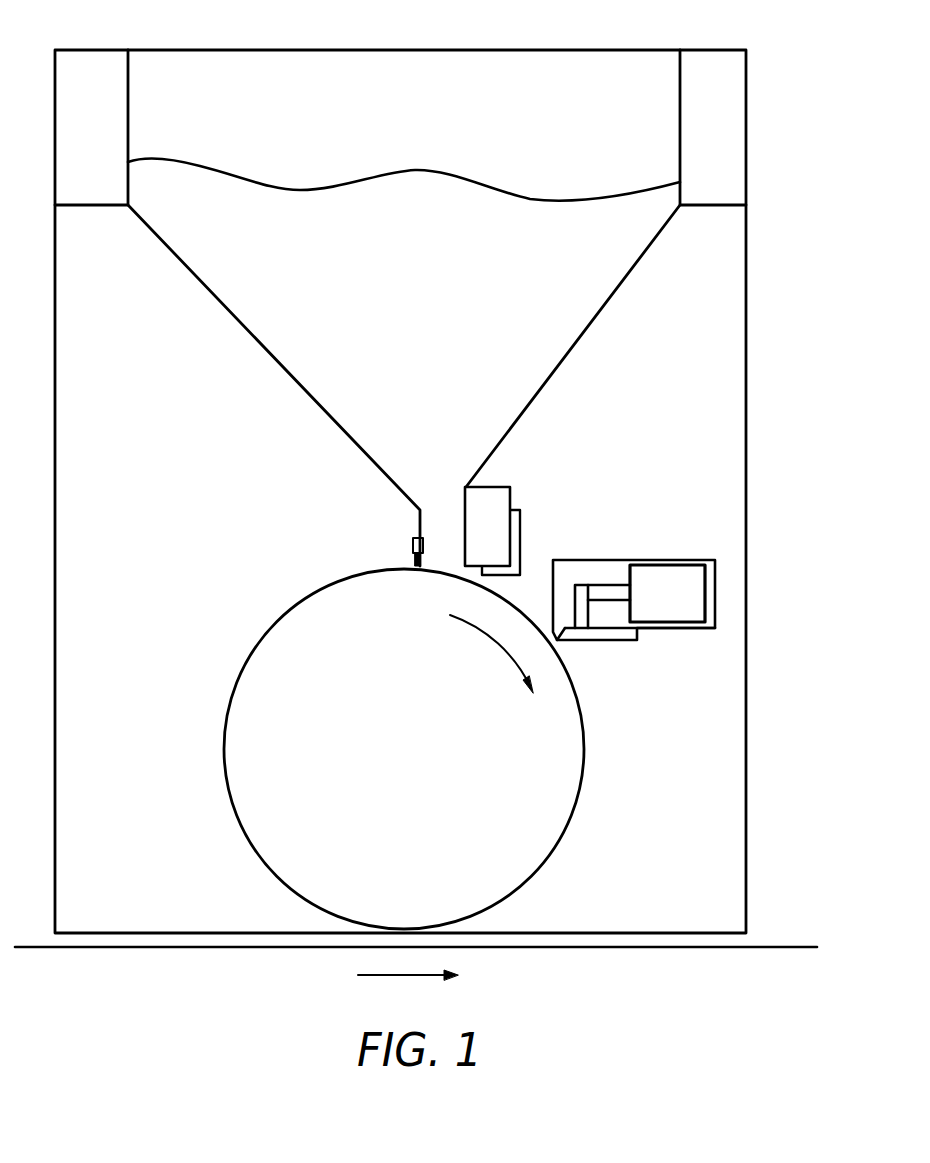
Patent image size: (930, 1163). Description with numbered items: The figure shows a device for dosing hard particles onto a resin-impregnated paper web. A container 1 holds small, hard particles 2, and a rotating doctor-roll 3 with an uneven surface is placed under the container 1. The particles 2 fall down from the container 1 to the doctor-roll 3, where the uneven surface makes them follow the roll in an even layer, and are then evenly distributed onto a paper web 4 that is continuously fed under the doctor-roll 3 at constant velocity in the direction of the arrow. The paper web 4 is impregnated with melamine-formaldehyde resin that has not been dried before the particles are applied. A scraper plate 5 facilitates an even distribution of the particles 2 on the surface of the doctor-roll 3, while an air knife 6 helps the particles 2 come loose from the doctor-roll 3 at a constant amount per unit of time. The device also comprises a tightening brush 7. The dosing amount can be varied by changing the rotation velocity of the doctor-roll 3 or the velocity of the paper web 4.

The container 1 is at (620, 72).
The small, hard particles 2 is at (495, 258).
The doctor-roll 3 is at (402, 746).
The paper web 4 is at (810, 946).
The scraper plate 5 is at (448, 565).
The air knife 6 is at (600, 570).
The tightening brush 7 is at (413, 557).